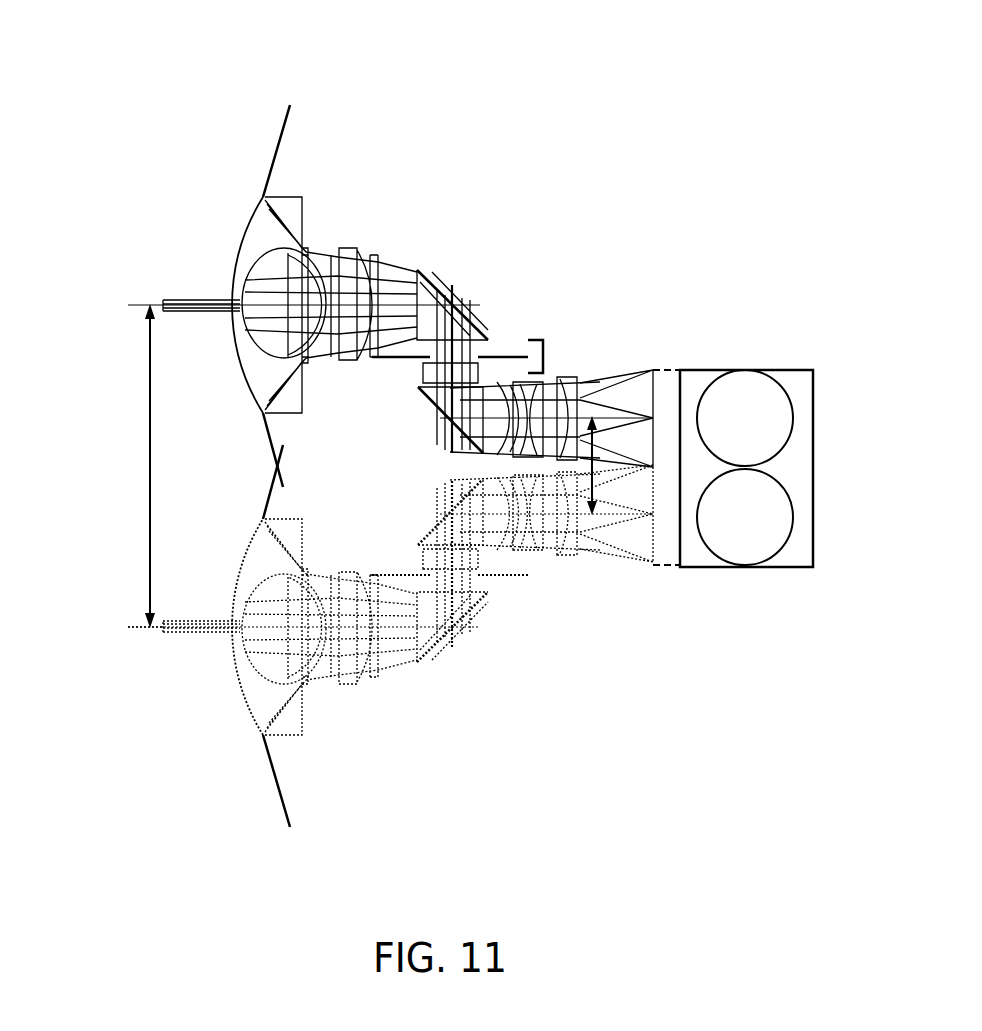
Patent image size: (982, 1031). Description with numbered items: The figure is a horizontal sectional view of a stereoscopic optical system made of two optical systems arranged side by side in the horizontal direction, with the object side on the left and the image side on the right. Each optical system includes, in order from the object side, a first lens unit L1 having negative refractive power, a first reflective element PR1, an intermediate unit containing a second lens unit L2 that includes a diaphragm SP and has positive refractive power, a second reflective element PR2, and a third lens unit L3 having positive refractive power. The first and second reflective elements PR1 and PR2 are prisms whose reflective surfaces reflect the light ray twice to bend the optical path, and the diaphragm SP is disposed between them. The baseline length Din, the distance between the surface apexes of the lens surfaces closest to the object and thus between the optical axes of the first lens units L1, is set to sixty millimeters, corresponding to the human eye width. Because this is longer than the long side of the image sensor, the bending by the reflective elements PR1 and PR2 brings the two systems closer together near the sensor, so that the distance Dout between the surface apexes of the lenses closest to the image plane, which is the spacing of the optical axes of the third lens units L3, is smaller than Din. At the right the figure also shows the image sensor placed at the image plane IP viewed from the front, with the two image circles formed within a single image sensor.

The first lens unit L1 is at (378, 95).
The first reflective element PR1 is at (445, 292).
The diaphragm SP is at (494, 356).
The second reflective element PR2 is at (432, 386).
The second lens unit L2 is at (548, 342).
The third lens unit L3 is at (492, 570).
The image plane IP is at (654, 370).
The distance between surface apexes of the lenses closest to the image plane Dout is at (595, 500).
The baseline length Din is at (150, 592).